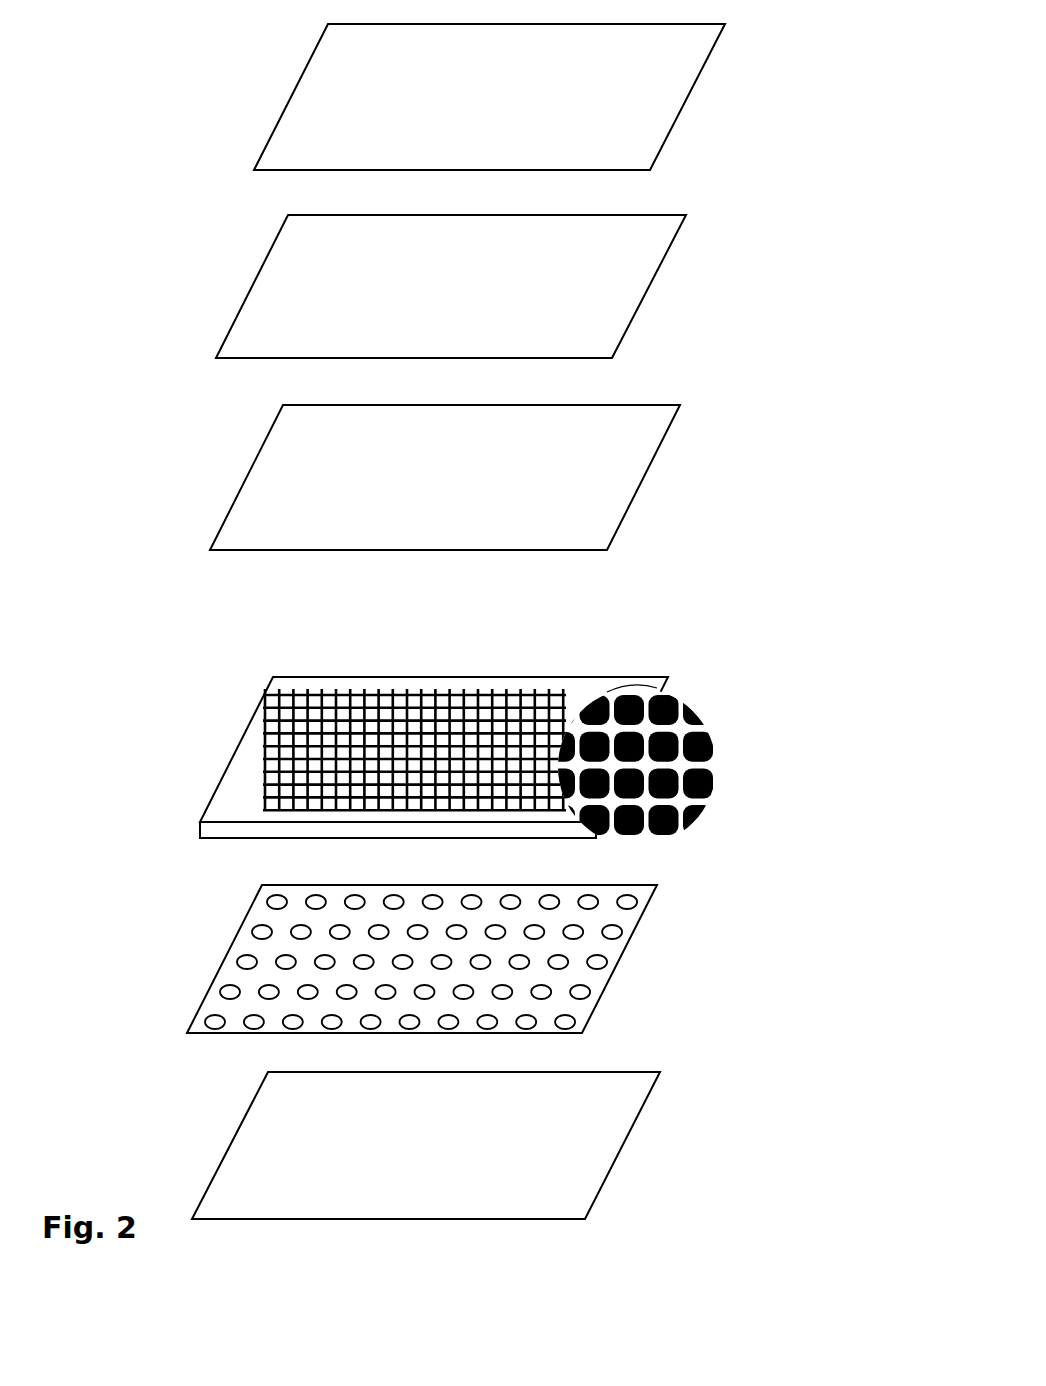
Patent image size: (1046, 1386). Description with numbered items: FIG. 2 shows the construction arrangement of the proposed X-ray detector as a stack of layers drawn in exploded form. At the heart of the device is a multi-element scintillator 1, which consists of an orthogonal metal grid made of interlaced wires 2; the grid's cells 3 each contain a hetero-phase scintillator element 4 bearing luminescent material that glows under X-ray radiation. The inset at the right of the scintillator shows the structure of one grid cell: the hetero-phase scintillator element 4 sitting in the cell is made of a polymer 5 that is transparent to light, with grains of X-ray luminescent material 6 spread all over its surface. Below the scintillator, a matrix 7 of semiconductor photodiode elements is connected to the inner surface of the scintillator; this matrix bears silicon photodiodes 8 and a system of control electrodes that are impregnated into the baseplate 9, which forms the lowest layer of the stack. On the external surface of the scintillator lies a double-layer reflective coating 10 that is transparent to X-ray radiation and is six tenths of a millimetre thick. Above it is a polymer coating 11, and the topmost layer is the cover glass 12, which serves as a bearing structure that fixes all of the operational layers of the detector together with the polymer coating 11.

The multi-element scintillator 1 is at (270, 682).
The interlaced wires 2 is at (473, 726).
The grid cells 3 is at (260, 767).
The hetero-phase scintillator element 4 is at (660, 773).
The polymer 5 is at (698, 783).
The grains of X-ray luminescent material 6 is at (698, 710).
The matrix of semiconductor photodiode elements 7 is at (416, 959).
The silicon photodiodes 8 is at (229, 992).
The baseplate 9 is at (578, 1138).
The double-layer reflective coating 10 is at (596, 455).
The polymer coating 11 is at (614, 290).
The cover glass 12 is at (632, 98).